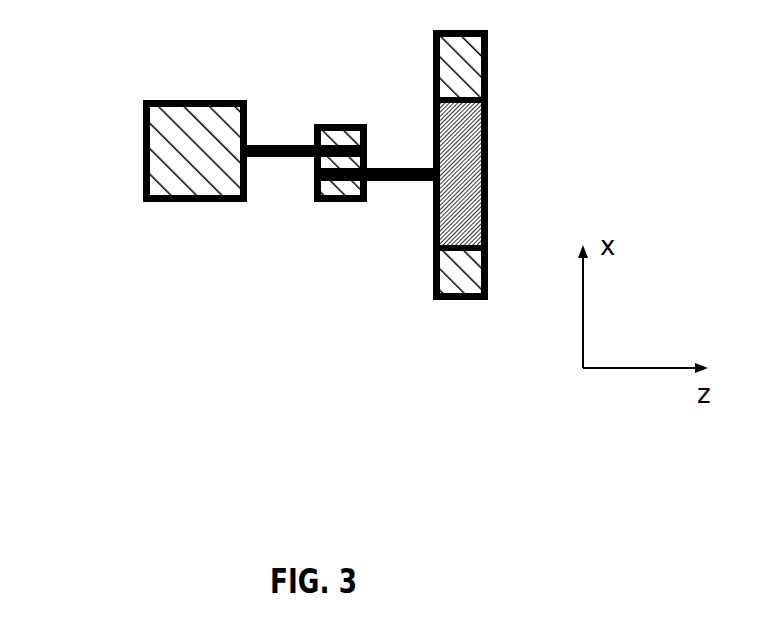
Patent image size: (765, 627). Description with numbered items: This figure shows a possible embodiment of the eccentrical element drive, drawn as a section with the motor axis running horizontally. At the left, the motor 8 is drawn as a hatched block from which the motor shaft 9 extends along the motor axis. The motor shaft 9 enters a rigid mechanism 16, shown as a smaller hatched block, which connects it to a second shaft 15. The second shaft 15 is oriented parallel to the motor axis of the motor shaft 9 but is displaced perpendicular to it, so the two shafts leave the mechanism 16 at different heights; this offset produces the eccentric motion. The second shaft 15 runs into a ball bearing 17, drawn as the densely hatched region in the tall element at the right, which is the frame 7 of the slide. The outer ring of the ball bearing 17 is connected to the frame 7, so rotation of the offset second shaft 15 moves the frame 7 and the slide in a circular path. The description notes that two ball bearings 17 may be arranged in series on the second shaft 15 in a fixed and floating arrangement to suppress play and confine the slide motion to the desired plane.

The frame 7 is at (460, 53).
The motor 8 is at (183, 145).
The motor shaft 9 is at (292, 158).
The second shaft 15 is at (398, 183).
The mechanism 16 is at (342, 190).
The ball bearing 17 is at (488, 135).